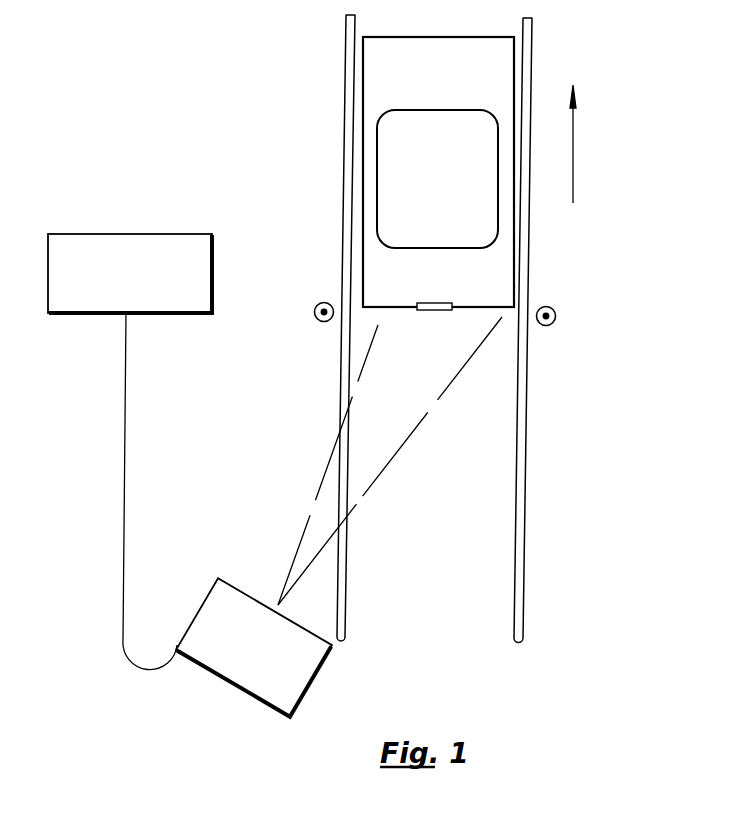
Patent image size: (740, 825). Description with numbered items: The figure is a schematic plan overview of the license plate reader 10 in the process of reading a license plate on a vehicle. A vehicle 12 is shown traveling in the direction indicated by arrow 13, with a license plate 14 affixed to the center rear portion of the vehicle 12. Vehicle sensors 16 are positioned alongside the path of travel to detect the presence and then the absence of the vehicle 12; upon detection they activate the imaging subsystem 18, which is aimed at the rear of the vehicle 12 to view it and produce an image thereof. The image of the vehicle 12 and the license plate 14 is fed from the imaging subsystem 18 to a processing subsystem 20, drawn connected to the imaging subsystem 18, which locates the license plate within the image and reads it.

The license plate reader 10 is at (280, 206).
The vehicle 12 is at (483, 63).
The arrow 13 is at (575, 146).
The license plate 14 is at (435, 303).
The vehicle sensors 16 is at (313, 318).
The imaging subsystem 18 is at (208, 672).
The processing subsystem 20 is at (152, 234).